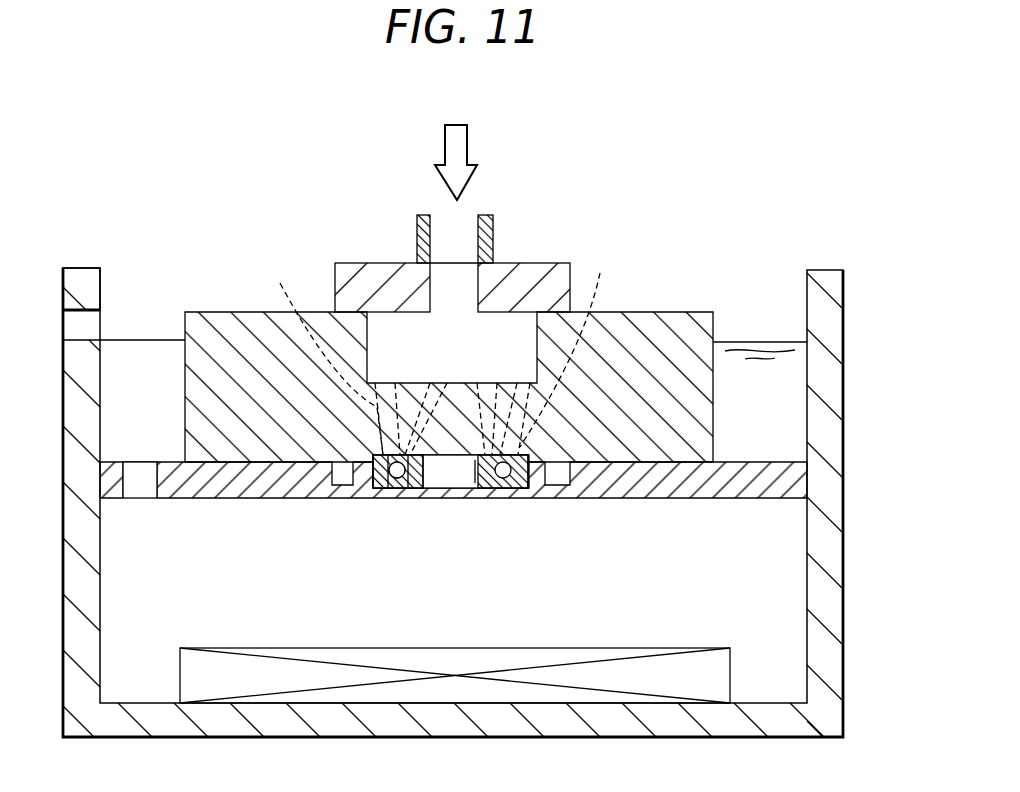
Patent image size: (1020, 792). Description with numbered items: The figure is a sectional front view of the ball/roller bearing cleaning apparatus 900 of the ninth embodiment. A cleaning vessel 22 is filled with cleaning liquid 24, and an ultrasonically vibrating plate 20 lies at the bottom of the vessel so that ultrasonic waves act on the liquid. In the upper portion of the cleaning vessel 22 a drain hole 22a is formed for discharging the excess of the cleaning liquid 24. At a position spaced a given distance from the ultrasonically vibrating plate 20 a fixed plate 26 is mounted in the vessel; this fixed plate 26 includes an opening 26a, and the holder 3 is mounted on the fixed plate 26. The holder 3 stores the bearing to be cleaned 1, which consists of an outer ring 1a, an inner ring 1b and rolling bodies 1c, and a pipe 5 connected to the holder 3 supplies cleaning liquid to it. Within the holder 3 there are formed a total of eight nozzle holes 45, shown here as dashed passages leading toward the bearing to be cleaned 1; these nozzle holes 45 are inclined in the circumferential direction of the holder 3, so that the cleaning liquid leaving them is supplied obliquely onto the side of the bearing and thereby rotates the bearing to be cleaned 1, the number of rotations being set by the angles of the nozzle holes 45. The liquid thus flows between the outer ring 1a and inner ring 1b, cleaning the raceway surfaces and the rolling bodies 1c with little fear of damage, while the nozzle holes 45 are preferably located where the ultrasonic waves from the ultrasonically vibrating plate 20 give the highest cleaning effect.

The ball/roller bearing cleaning apparatus 900 is at (706, 212).
The bearing to be cleaned 1 is at (528, 447).
The outer ring 1a is at (380, 488).
The inner ring 1b is at (410, 488).
The rolling bodies 1c is at (400, 488).
The holder 3 is at (688, 312).
The pipe 5 is at (417, 232).
The ultrasonically vibrating plate 20 is at (730, 682).
The cleaning vessel 22 is at (820, 270).
The drain hole 22a is at (72, 322).
The cleaning liquid 24 is at (468, 141).
The fixed plate 26 is at (793, 480).
The opening 26a is at (137, 498).
The nozzle holes 45 is at (442, 350).